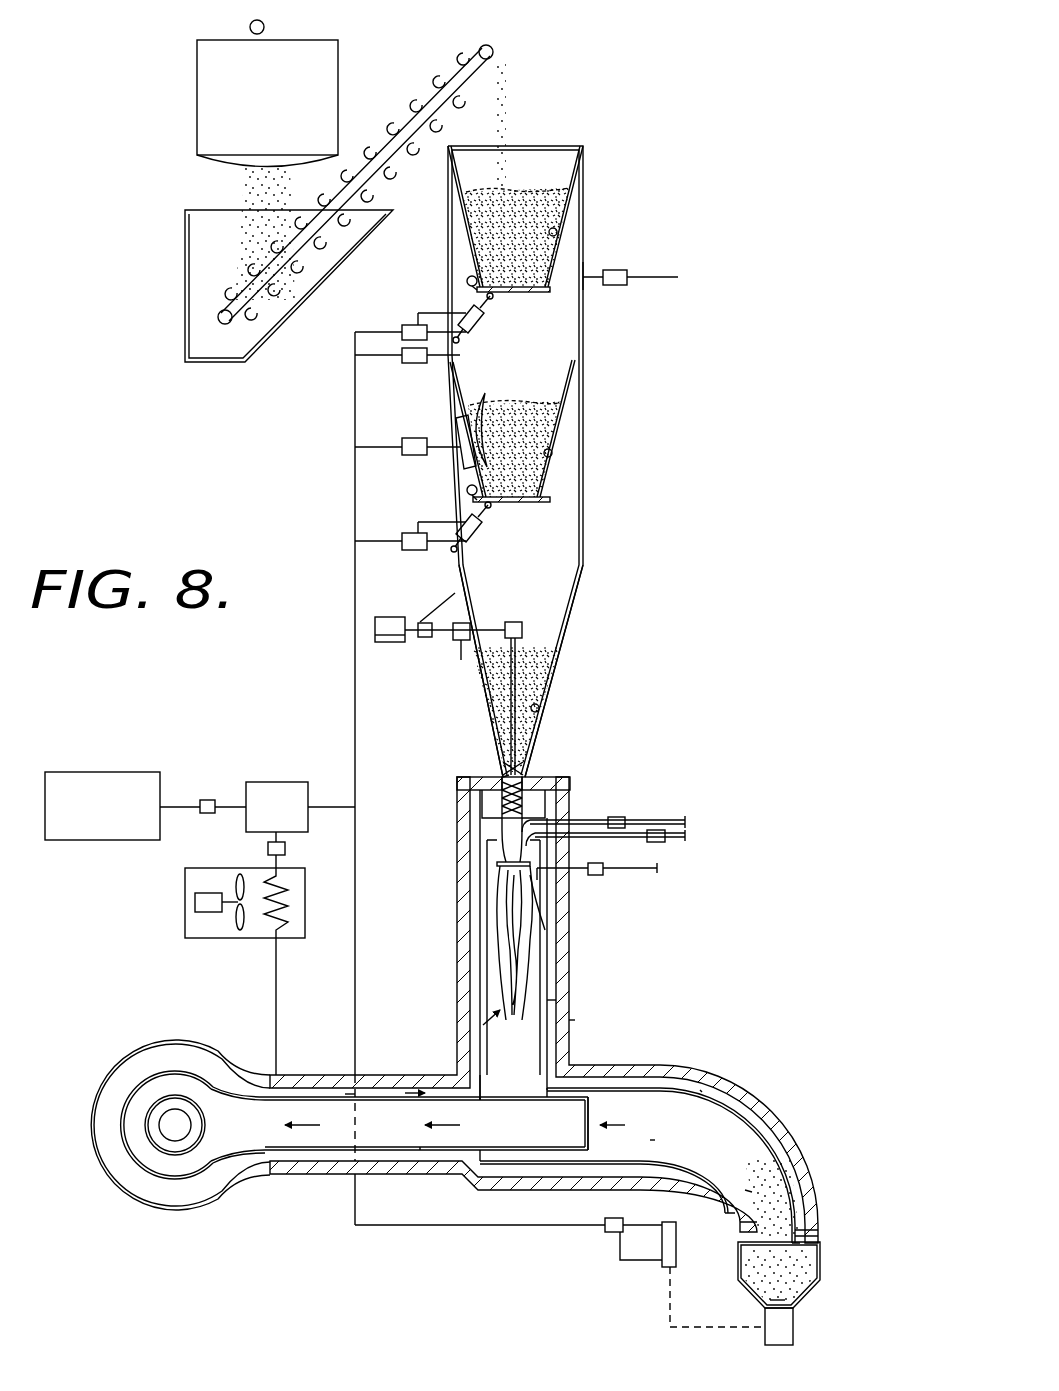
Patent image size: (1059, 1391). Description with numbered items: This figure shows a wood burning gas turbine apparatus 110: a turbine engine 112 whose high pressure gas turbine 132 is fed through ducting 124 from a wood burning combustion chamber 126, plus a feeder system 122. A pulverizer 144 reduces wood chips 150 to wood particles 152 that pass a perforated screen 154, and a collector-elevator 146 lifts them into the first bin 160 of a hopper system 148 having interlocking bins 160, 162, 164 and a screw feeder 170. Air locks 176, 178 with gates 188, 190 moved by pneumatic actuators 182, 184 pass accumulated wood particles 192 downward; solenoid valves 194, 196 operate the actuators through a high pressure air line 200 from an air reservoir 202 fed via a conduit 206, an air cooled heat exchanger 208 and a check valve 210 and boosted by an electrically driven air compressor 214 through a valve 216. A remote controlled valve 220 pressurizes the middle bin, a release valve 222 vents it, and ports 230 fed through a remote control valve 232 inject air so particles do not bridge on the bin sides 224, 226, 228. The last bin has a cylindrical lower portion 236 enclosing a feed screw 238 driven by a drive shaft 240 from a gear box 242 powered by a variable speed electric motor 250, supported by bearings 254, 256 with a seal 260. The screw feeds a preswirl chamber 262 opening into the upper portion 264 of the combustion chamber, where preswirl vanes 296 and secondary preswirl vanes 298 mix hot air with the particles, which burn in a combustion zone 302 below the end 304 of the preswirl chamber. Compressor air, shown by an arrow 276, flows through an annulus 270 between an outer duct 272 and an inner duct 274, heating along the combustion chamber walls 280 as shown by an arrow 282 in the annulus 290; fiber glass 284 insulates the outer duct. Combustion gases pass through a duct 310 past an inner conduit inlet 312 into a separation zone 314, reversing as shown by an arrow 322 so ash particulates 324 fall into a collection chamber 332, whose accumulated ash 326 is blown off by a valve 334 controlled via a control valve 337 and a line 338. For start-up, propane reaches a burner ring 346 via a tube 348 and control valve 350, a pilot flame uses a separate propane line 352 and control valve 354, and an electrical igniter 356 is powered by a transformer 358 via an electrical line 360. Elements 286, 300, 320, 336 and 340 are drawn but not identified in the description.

The wood burning gas turbine apparatus 110 is at (698, 715).
The turbine engine 112 is at (120, 1052).
The wood particle feeding system 122 is at (584, 117).
The ducting 124 is at (328, 1097).
The wood burning combustion chamber 126 is at (478, 1027).
The high pressure gas turbine 132 is at (92, 1110).
The pulverizer 144 is at (197, 72).
The collector-elevator 146 is at (405, 110).
The hopper system 148 is at (590, 250).
The wood chips 150 is at (250, 27).
The wood particles 152 is at (235, 195).
The screen 154 is at (245, 170).
The first bin 160 is at (568, 150).
The second bin 162 is at (576, 378).
The third bin 164 is at (565, 600).
The screw feeder 170 is at (548, 782).
The air lock 176 is at (514, 296).
The air lock 178 is at (518, 506).
The pneumatic actuator 182 is at (476, 334).
The pneumatic actuator 184 is at (476, 546).
The moveable gate 188 is at (482, 283).
The moveable gate 190 is at (560, 486).
The accumulated wood particles 192 is at (540, 196).
The solenoid valve 194 is at (412, 325).
The solenoid valve 196 is at (414, 550).
The high pressure air line 200 is at (355, 525).
The air reservoir 202 is at (291, 782).
The conduit 206 is at (276, 978).
The air cooled heat exchanger 208 is at (185, 924).
The check valve 210 is at (268, 849).
The electrically driven air compressor 214 is at (101, 772).
The valve 216 is at (212, 800).
The remote controlled valve 220 is at (416, 363).
The remote controlled release valve 222 is at (617, 285).
The bin side 224 is at (560, 231).
The bin side 226 is at (555, 452).
The bin side 228 is at (540, 708).
The ports 230 is at (488, 396).
The remote control valve 232 is at (416, 438).
The cylindrical lower portion 236 is at (505, 777).
The feed screw 238 is at (526, 772).
The drive shaft 240 is at (518, 740).
The gear box 242 is at (524, 630).
The variable speed electric motor 250 is at (405, 595).
The bearing 254 is at (425, 637).
The bearing 256 is at (461, 660).
The seal 260 is at (470, 623).
The preswirl chamber 262 is at (500, 808).
The upper portion of the combustion chamber 264 is at (497, 862).
The annulus 270 is at (358, 1090).
The outer duct 272 is at (345, 1174).
The inner duct 274 is at (390, 1150).
The air flow arrow 276 is at (395, 1093).
The combustion chamber walls 280 is at (478, 1001).
The heated air flow arrow 282 is at (457, 960).
The fiber glass 284 is at (570, 979).
The casing 286 is at (572, 1027).
The annulus 290 is at (556, 1003).
The stationary pressure vanes 296 is at (475, 796).
The secondary air preswirl vanes 298 is at (487, 850).
The nozzle throat 300 is at (502, 836).
The combustion zone 302 is at (530, 942).
The end of the preswirl chamber 304 is at (482, 900).
The duct 310 is at (712, 1123).
The inner conduit inlet 312 is at (590, 1110).
The separation zone 314 is at (714, 1120).
The exhaust liner 320 is at (560, 1086).
The flow reversal arrow 322 is at (612, 1128).
The ash particulates 324 is at (770, 1216).
The accumulated ash particulates 326 is at (768, 1300).
The collection chamber 332 is at (822, 1260).
The valve 334 is at (795, 1330).
The ash control 336 is at (676, 1253).
The control valve 337 is at (605, 1236).
The line 338 is at (470, 1225).
The elbow end plate 340 is at (760, 1160).
The burner ring 346 is at (492, 872).
The tube 348 is at (584, 817).
The control valve 350 is at (626, 820).
The propane fuel line 352 is at (591, 838).
The control valve 354 is at (666, 845).
The electrical igniter 356 is at (548, 900).
The transformer 358 is at (596, 875).
The electrical line 360 is at (560, 875).